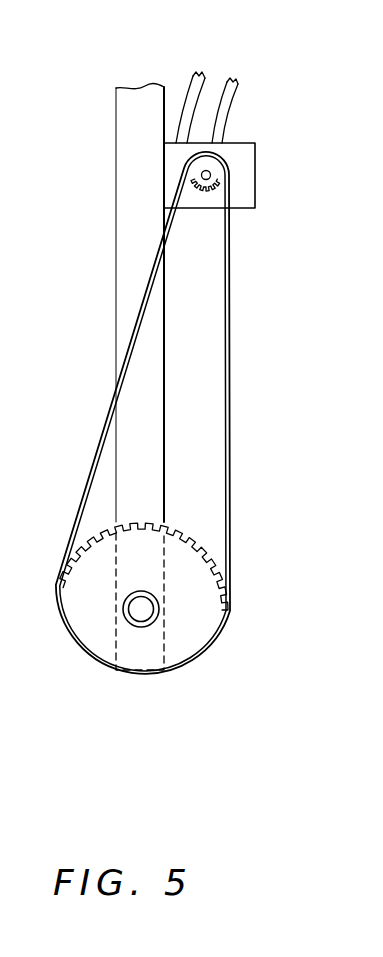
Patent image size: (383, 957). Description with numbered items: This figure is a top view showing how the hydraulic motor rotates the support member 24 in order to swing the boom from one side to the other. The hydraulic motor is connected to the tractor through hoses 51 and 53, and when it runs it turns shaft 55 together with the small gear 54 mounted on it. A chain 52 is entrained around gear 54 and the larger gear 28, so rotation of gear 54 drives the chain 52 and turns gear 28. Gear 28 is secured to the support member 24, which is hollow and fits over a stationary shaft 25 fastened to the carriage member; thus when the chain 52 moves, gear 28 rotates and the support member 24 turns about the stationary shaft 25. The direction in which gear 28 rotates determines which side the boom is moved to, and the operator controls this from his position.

The support member 24 is at (156, 598).
The stationary shaft 25 is at (137, 610).
The gear 28 is at (180, 552).
The hose 51 is at (190, 88).
The chain 52 is at (230, 366).
The hose 53 is at (232, 95).
The gear 54 is at (219, 168).
The shaft 55 is at (207, 185).